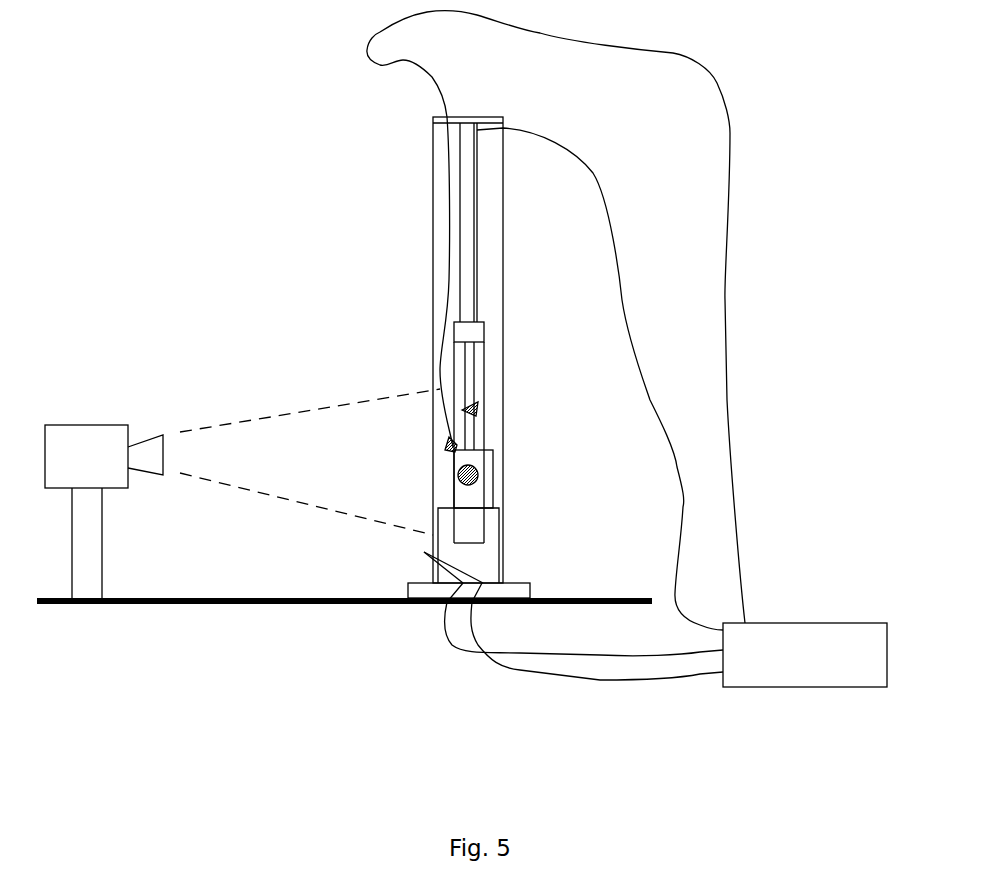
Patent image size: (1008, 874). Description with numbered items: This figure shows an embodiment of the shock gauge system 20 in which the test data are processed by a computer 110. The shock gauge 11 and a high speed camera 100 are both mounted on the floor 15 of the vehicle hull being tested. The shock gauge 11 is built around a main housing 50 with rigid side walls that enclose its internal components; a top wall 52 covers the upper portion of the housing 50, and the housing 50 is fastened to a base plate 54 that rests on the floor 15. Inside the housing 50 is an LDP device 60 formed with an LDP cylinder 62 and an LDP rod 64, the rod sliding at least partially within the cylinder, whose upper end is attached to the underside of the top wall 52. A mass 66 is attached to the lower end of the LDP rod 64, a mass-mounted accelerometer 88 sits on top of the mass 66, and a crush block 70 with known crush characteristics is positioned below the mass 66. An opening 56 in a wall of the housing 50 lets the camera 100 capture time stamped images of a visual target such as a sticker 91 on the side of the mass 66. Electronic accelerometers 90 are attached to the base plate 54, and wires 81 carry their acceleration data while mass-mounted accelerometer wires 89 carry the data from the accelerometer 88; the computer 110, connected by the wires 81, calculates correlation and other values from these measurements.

The shock gauge 11 is at (448, 155).
The floor 15 is at (300, 598).
The shock gauge system 20 is at (180, 170).
The main housing 50 is at (497, 305).
The top wall 52 is at (487, 120).
The base plate 54 is at (515, 588).
The opening 56 is at (465, 409).
The LDP device 60 is at (488, 229).
The LDP cylinder 62 is at (470, 333).
The LDP rod 64 is at (468, 380).
The mass 66 is at (490, 462).
The crush block 70 is at (483, 547).
The wires 81 is at (585, 160).
The mass-mounted accelerometer 88 is at (447, 448).
The mass-mounted accelerometer wires 89 is at (432, 80).
The electronic accelerometers 90 is at (438, 559).
The sticker 91 is at (478, 475).
The camera 100 is at (72, 469).
The computer 110 is at (790, 679).